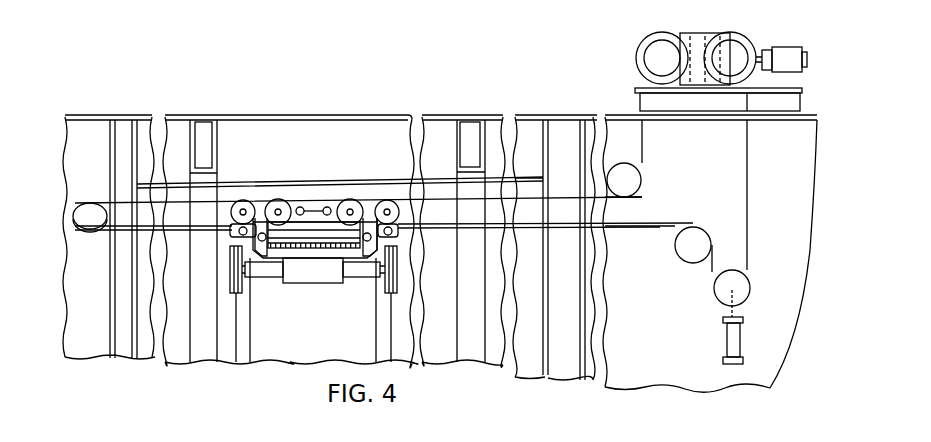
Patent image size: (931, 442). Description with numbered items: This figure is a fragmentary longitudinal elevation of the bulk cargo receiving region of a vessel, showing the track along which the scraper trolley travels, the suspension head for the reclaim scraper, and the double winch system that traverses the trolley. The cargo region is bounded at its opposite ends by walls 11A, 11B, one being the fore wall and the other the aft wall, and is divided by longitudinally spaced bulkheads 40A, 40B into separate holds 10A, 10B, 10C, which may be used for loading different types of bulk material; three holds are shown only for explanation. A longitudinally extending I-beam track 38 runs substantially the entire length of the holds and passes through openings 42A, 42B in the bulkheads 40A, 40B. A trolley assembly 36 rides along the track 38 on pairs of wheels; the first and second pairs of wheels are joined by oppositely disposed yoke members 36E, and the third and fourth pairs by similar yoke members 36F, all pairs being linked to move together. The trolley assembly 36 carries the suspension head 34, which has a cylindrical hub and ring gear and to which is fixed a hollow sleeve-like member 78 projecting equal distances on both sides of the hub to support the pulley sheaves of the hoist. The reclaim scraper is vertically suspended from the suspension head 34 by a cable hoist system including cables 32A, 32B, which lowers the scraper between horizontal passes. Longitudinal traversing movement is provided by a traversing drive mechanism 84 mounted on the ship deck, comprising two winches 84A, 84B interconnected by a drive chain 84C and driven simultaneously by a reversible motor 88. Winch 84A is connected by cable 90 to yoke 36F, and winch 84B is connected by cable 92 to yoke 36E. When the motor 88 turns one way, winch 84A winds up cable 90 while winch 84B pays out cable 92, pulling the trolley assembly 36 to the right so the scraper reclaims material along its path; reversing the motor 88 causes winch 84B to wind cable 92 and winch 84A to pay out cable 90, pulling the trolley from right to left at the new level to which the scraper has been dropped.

The wall 11A is at (122, 132).
The hold 10A is at (180, 125).
The hold 10B is at (317, 127).
The hold 10C is at (532, 123).
The wall 11B is at (565, 124).
The bulkhead 40A is at (222, 128).
The bulkhead 40B is at (488, 128).
The opening 42A is at (222, 178).
The opening 42B is at (413, 180).
The track 38 is at (212, 216).
The trolley assembly 36 is at (350, 190).
The yoke members 36E is at (258, 205).
The yoke members 36F is at (365, 204).
The suspension head 34 is at (313, 224).
The hollow sleeve-like member 78 is at (266, 287).
The cable 32A is at (250, 340).
The cable 32B is at (376, 328).
The traversing drive mechanism 84 is at (692, 27).
The winch 84A is at (753, 44).
The winch 84B is at (638, 54).
The drive chain 84C is at (709, 36).
The reversible motor 88 is at (790, 66).
The cable 92 is at (643, 152).
The cable 90 is at (640, 227).